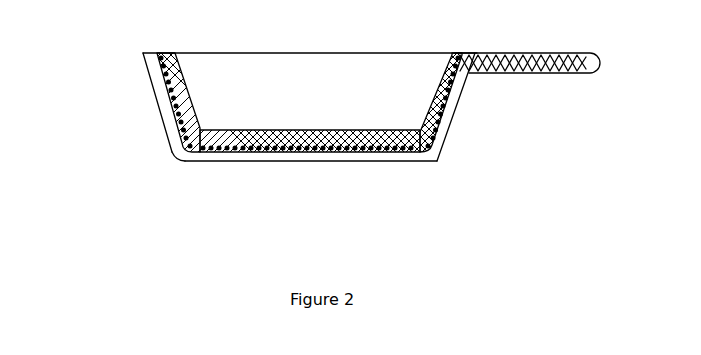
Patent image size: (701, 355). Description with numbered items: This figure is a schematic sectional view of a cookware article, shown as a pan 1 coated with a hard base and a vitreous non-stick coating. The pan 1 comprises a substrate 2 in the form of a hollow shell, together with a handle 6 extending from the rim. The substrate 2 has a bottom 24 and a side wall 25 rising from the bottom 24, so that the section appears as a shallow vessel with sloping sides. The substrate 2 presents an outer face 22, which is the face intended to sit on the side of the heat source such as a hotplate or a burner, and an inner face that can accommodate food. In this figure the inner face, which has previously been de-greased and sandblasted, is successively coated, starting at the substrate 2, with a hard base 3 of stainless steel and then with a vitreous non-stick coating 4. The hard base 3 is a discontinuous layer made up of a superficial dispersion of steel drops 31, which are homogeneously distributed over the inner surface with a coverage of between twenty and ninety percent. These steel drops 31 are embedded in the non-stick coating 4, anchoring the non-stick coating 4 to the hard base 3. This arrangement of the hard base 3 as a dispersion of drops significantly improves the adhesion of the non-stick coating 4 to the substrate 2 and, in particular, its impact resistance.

The pan 1 is at (375, 45).
The substrate 2 is at (160, 102).
The hard base 3 is at (165, 50).
The steel drops 31 is at (183, 90).
The vitreous non-stick coating 4 is at (223, 132).
The handle 6 is at (542, 52).
The outer face 22 is at (178, 157).
The bottom 24 is at (390, 175).
The side wall 25 is at (138, 133).